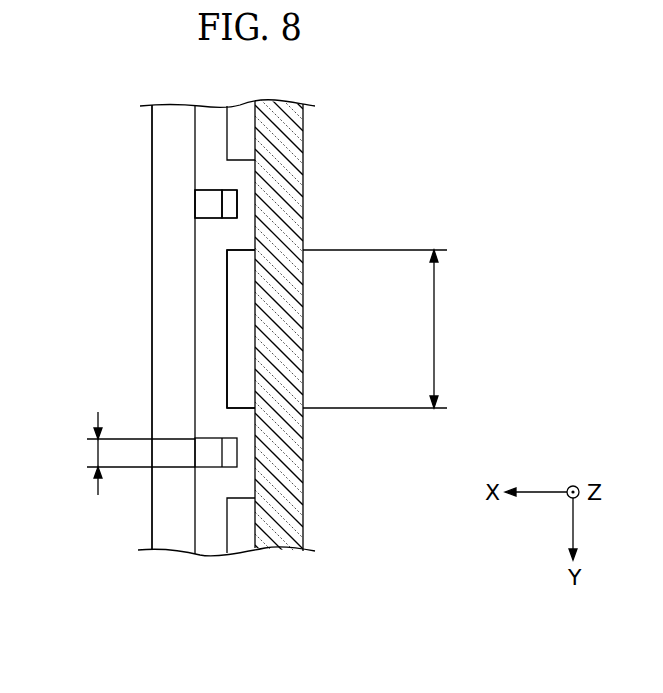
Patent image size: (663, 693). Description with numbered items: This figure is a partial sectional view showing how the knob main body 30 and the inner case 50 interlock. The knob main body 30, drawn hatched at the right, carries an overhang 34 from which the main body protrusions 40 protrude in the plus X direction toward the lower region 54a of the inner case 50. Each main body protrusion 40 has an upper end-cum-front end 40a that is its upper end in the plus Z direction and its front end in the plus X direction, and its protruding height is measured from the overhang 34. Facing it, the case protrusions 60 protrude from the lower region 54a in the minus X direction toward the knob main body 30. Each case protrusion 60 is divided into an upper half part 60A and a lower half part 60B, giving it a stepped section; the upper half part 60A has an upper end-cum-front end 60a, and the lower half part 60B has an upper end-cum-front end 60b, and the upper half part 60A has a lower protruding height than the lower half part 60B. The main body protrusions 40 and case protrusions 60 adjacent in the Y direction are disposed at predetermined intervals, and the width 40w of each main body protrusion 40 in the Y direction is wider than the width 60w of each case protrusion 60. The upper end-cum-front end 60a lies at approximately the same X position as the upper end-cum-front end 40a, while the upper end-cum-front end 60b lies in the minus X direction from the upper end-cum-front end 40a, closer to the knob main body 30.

The knob main body 30 is at (277, 562).
The overhang 34 is at (287, 130).
The main body protrusion 40 is at (243, 323).
The upper end-cum-front end 40a is at (228, 352).
The width of main body protrusion 40w is at (393, 329).
The inner case 50 is at (172, 564).
The lower region 54a is at (170, 123).
The case protrusion 60 is at (189, 204).
The upper half part 60A is at (206, 190).
The lower half part 60B is at (228, 220).
The upper end-cum-front end of upper half part 60a is at (237, 198).
The upper end-cum-front end of lower half part 60b is at (237, 208).
The width of case protrusion 60w is at (118, 453).